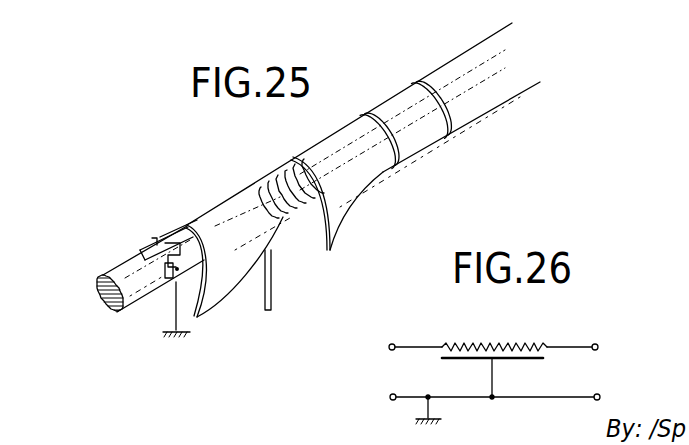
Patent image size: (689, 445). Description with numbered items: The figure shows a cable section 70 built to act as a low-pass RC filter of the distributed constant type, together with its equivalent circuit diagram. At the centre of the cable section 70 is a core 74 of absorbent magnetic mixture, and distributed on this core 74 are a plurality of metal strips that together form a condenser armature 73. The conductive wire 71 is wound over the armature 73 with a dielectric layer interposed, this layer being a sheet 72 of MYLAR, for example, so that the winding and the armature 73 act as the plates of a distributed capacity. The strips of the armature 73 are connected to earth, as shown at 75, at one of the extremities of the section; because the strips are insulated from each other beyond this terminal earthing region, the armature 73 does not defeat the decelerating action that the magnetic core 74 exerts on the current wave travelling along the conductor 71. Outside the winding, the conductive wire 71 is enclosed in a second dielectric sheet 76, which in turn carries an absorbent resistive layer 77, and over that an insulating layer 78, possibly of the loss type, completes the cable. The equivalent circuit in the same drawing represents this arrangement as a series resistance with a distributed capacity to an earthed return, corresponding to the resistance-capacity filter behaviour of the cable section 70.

The cable section 70 is at (381, 94).
The conductive wire 71 is at (272, 290).
The dielectric sheet 72 is at (215, 303).
The condenser armature 73 is at (187, 224).
The core 74 is at (105, 298).
The earth connection 75 is at (162, 298).
The second dielectric sheet 76 is at (345, 227).
The absorbent resistive layer 77 is at (422, 143).
The insulating layer 78 is at (493, 97).